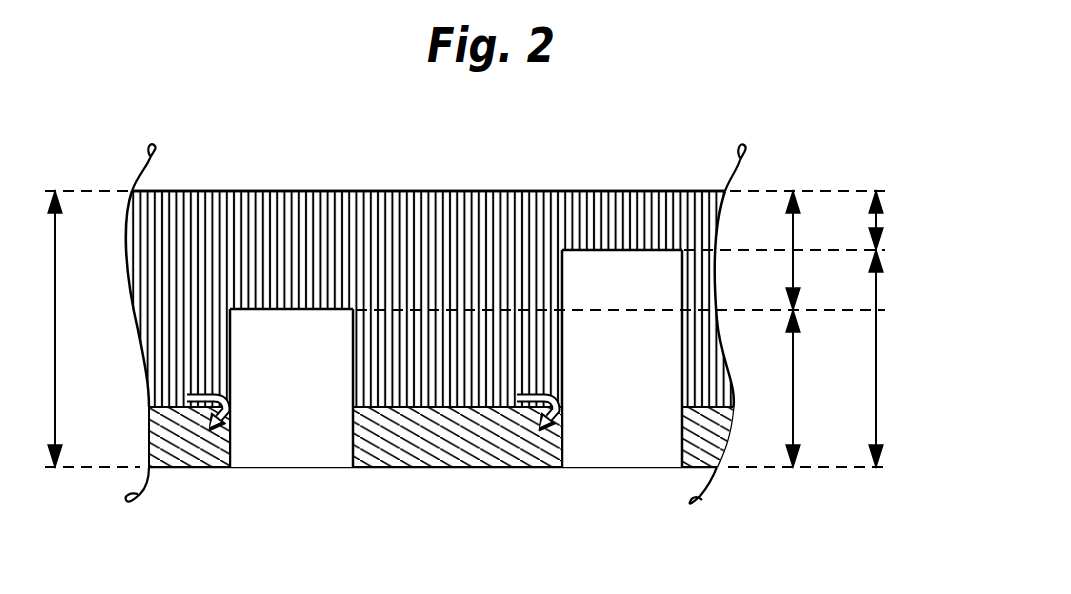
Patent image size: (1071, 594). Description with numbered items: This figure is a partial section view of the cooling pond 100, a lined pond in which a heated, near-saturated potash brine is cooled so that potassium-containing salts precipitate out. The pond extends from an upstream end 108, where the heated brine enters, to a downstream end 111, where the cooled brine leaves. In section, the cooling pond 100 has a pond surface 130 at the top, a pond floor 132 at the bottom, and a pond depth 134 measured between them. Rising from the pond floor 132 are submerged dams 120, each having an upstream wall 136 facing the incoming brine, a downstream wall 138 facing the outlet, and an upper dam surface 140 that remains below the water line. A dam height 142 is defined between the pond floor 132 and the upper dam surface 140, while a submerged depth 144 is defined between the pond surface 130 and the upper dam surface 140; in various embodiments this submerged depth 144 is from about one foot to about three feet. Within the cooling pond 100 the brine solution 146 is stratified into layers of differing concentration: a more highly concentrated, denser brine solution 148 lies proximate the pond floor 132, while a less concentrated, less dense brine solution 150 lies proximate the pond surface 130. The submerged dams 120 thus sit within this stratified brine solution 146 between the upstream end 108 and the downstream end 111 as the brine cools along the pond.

The cooling pond 100 is at (633, 87).
The upstream end 108 is at (78, 329).
The downstream end 111 is at (771, 329).
The submerged dam 120 is at (294, 441).
The pond surface 130 is at (651, 191).
The pond floor 132 is at (457, 467).
The pond depth 134 is at (52, 236).
The upstream wall 136 is at (231, 432).
The downstream wall 138 is at (352, 432).
The upper dam surface 140 is at (248, 310).
The dam height 142 is at (876, 418).
The submerged depth 144 is at (795, 232).
The brine solution 146 is at (192, 298).
The denser brine solution 148 is at (188, 445).
The less dense brine solution 150 is at (410, 212).